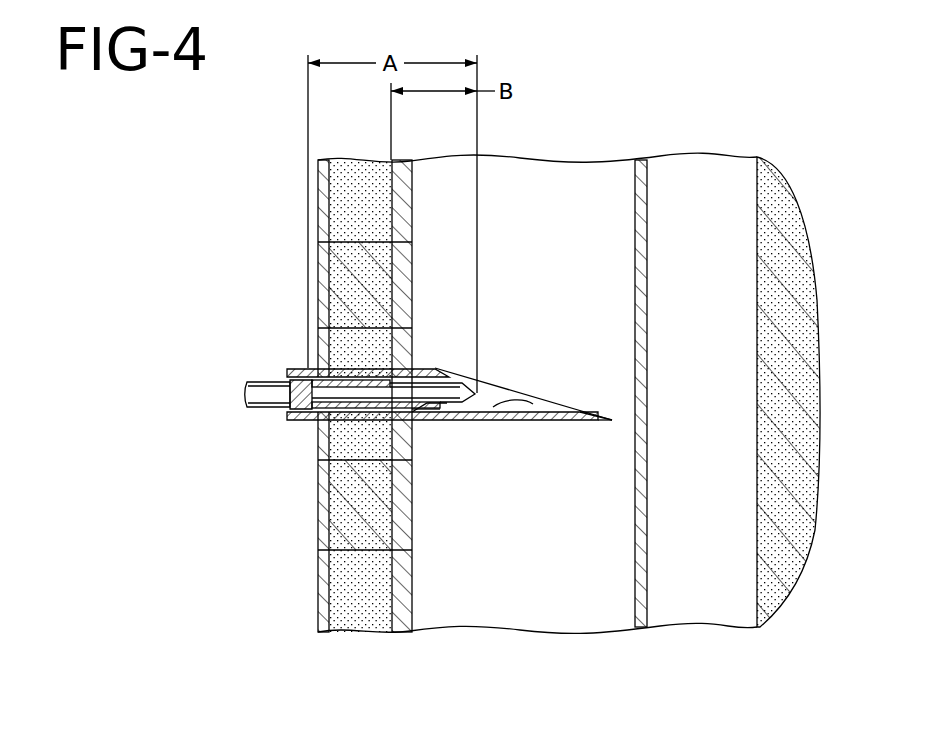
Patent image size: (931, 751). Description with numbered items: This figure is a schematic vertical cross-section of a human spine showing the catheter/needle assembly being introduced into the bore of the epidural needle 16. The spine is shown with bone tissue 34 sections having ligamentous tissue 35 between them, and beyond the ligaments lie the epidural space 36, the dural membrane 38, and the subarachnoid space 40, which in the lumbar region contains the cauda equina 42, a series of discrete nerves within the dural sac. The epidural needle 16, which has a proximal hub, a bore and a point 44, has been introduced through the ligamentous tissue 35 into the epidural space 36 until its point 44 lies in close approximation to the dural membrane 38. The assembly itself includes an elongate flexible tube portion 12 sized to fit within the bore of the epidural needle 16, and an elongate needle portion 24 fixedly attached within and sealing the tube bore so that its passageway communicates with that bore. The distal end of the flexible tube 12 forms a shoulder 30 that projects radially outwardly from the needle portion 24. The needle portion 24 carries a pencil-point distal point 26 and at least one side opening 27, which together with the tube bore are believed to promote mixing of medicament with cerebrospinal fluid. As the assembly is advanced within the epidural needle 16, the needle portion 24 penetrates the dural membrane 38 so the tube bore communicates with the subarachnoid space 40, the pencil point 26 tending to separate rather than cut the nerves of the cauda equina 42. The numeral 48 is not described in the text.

The flexible tube portion 12 is at (247, 402).
The epidural needle 16 is at (300, 368).
The needle portion 24 is at (448, 421).
The distal point 26 is at (470, 396).
The side opening 27 is at (430, 368).
The shoulder 30 is at (425, 421).
The bone tissue 34 is at (318, 283).
The ligamentous tissue 35 is at (342, 448).
The epidural space 36 is at (512, 618).
The dural membrane 38 is at (650, 585).
The subarachnoid space 40 is at (688, 185).
The cauda equina 42 is at (778, 217).
The point 44 is at (603, 422).
The opening 48 is at (537, 422).